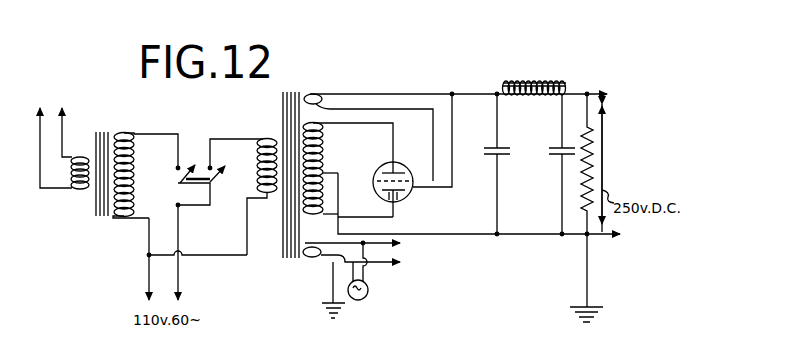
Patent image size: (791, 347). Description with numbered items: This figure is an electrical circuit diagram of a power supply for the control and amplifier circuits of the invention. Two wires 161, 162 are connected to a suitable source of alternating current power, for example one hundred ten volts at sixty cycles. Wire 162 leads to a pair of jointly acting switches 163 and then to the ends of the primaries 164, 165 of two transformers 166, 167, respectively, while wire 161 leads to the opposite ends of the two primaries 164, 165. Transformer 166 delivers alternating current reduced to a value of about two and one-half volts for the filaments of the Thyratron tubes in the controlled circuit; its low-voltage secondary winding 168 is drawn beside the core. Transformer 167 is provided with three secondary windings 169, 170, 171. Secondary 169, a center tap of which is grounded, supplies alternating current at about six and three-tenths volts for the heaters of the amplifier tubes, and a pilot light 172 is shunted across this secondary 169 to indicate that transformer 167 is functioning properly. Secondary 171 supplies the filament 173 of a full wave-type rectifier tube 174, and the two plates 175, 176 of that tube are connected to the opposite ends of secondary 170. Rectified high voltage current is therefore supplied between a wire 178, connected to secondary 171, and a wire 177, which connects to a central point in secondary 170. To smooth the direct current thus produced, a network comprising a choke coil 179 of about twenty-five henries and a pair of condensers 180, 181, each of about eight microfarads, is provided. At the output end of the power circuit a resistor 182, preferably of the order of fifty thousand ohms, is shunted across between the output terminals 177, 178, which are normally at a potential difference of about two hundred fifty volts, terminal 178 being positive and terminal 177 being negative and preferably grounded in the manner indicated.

The wire 161 is at (147, 272).
The wire 162 is at (150, 133).
The jointly acting switches 163 is at (201, 160).
The primary 164 is at (135, 190).
The primary 165 is at (258, 174).
The transformer 166 is at (92, 214).
The transformer 167 is at (278, 258).
The filament winding 168 is at (72, 181).
The secondary winding 169 is at (317, 261).
The secondary winding 170 is at (324, 138).
The secondary winding 171 is at (317, 99).
The pilot light 172 is at (358, 300).
The filament 173 is at (413, 190).
The rectifier tube 174 is at (399, 163).
The plate 175 is at (388, 160).
The plate 176 is at (398, 201).
The wire 177 is at (340, 192).
The wire 178 is at (482, 94).
The choke coil 179 is at (543, 80).
The condenser 180 is at (500, 156).
The condenser 181 is at (550, 160).
The resistor 182 is at (594, 178).